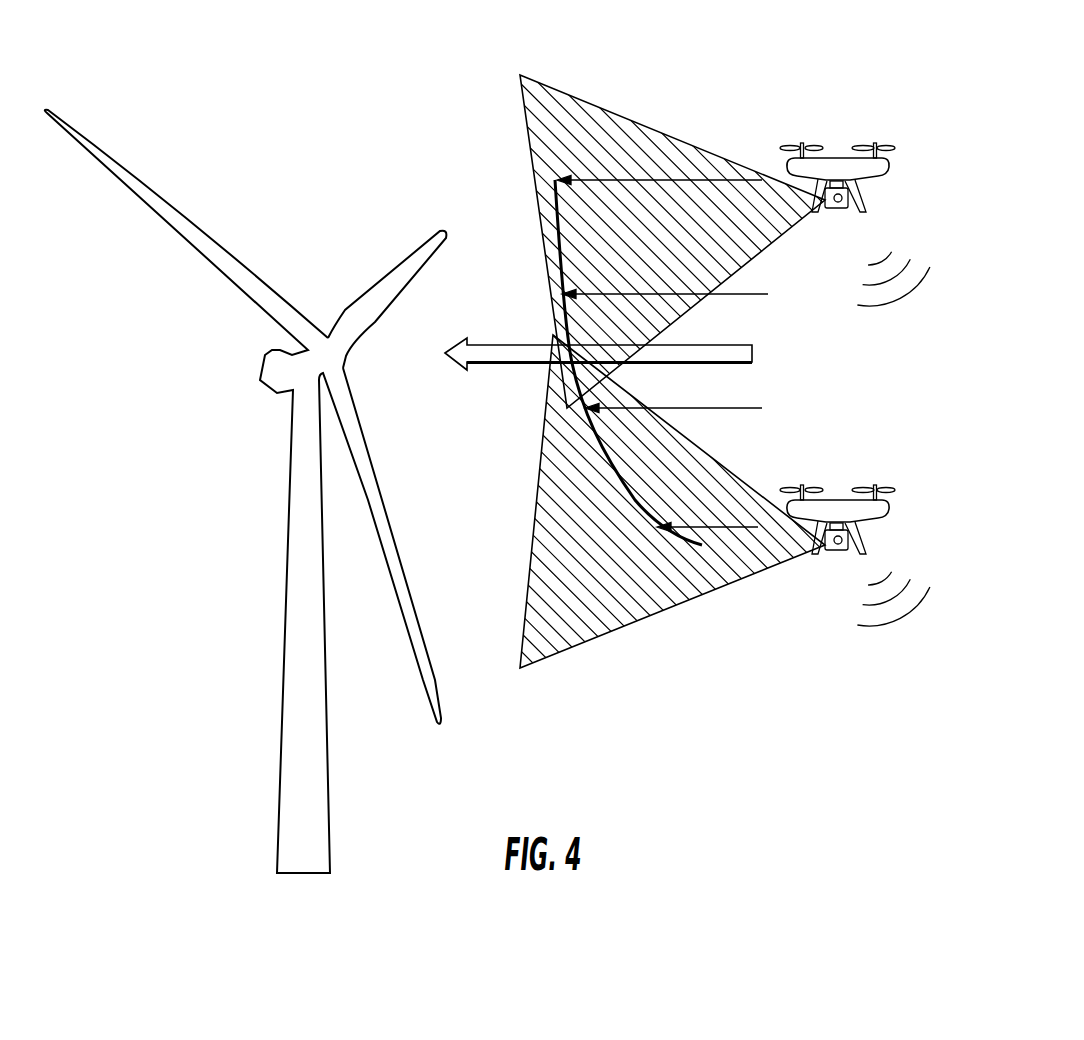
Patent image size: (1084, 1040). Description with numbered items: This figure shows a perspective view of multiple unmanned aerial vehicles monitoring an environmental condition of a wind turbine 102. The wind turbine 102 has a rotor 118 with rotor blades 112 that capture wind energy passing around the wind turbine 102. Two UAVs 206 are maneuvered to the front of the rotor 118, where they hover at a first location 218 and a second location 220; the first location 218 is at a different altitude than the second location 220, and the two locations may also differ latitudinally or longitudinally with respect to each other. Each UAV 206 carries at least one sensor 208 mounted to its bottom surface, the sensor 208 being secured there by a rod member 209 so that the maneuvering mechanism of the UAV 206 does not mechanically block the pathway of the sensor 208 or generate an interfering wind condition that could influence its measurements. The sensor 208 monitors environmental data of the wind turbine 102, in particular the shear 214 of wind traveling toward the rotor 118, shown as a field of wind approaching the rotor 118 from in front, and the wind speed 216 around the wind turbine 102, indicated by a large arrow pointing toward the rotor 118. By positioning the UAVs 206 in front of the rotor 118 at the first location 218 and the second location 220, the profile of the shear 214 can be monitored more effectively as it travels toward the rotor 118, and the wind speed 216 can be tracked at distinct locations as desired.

The wind turbine 102 is at (246, 491).
The rotor blades 112 is at (371, 303).
The rotor 118 is at (378, 370).
The UAV 206 is at (869, 327).
The sensor 208 is at (835, 210).
The rod member 209 is at (862, 190).
The shear 214 is at (778, 422).
The wind speed 216 is at (510, 347).
The first location 218 is at (861, 167).
The second location 220 is at (880, 534).